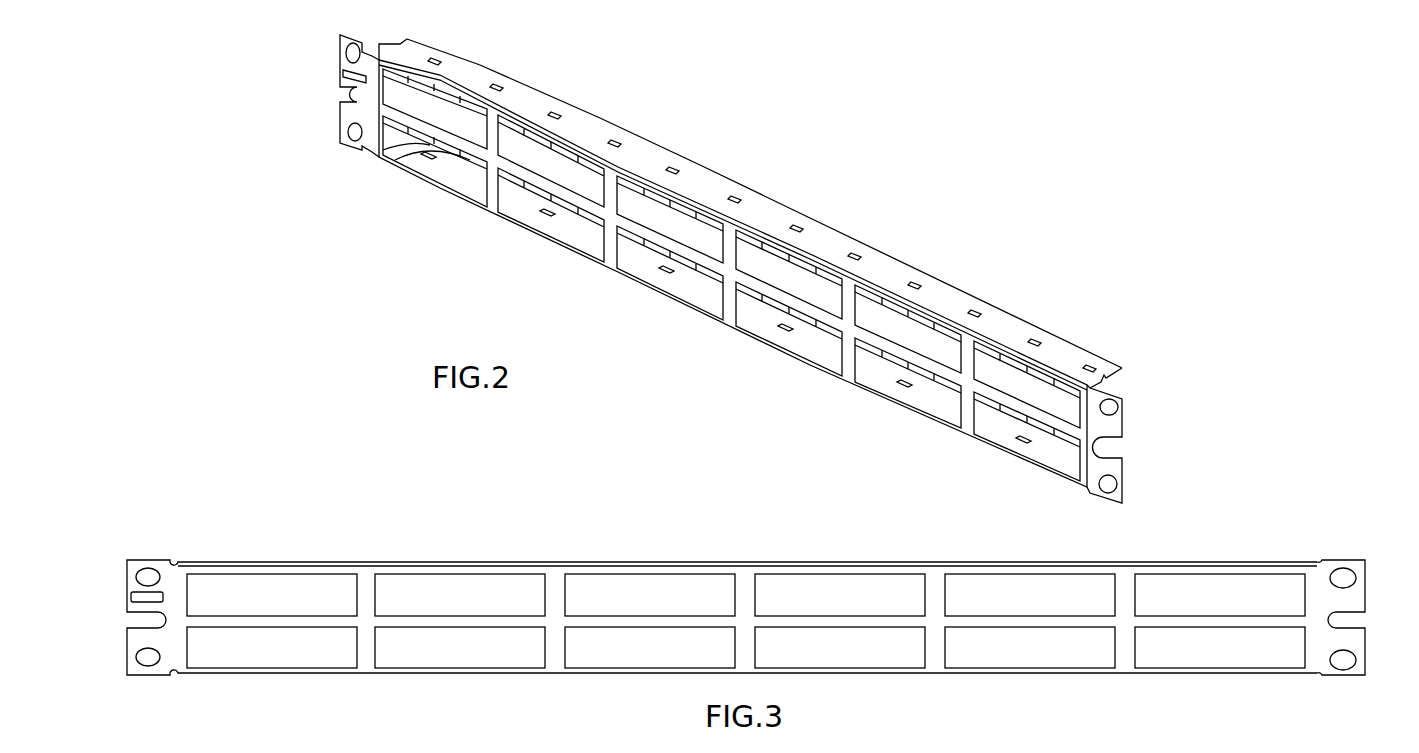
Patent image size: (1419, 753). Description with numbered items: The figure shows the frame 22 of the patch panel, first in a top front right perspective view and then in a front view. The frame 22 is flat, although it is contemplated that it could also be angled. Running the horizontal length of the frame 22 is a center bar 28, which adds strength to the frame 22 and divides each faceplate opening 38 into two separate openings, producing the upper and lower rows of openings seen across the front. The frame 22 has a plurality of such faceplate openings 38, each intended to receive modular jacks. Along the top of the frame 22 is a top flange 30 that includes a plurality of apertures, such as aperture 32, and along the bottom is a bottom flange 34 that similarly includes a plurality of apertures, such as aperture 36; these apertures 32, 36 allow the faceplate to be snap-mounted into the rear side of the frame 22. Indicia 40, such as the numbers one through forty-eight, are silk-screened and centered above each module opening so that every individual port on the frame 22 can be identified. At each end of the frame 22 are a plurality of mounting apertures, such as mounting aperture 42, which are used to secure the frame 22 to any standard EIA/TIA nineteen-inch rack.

In FIG. 2, the frame 22 is at (342, 107).
In FIG. 3, the frame 22 is at (172, 596).
In FIG. 2, the center bar 28 is at (588, 212).
In FIG. 3, the center bar 28 is at (460, 620).
In FIG. 2, the top flange 30 is at (580, 113).
In FIG. 2, the aperture 32 is at (497, 72).
In FIG. 2, the bottom flange 34 is at (435, 190).
In FIG. 2, the aperture 36 is at (385, 170).
In FIG. 2, the faceplate opening 38 is at (790, 275).
In FIG. 3, the faceplate opening 38 is at (812, 590).
In FIG. 2, the indicia 40 is at (487, 200).
In FIG. 3, the indicia 40 is at (915, 620).
In FIG. 2, the mounting aperture 42 is at (342, 145).
In FIG. 3, the mounting aperture 42 is at (147, 572).